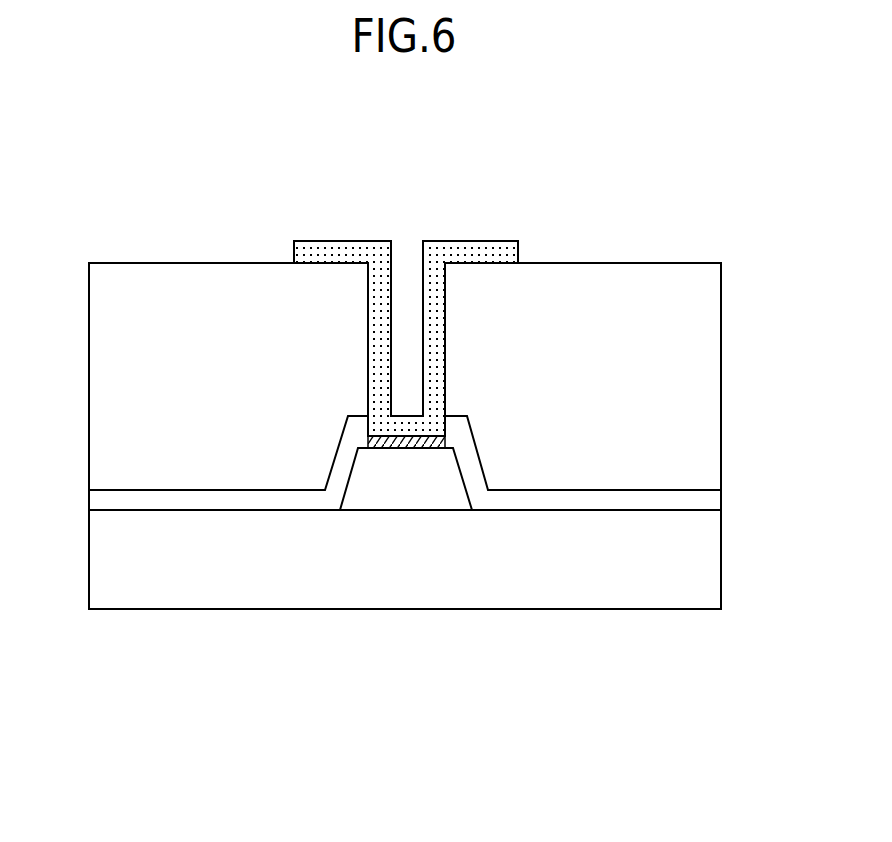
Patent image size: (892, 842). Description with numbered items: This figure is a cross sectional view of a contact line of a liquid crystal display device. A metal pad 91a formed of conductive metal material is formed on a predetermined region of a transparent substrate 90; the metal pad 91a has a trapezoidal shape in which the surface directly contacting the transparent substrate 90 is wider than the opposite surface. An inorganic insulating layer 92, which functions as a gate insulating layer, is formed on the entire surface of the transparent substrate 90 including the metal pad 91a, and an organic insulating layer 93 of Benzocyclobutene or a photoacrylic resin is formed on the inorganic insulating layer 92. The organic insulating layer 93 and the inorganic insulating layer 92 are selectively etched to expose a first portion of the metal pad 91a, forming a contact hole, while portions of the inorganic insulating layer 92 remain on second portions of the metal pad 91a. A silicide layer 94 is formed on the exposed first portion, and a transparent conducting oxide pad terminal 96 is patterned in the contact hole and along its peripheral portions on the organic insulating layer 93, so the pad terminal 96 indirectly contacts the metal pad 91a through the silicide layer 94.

The transparent substrate 90 is at (695, 573).
The metal pad 91a is at (410, 493).
The inorganic insulating layer 92 is at (695, 505).
The organic insulating layer 93 is at (695, 385).
The silicide layer 94 is at (443, 438).
The pad terminal 96 is at (435, 303).